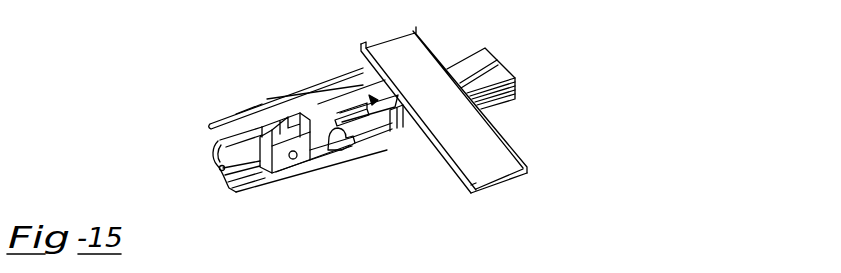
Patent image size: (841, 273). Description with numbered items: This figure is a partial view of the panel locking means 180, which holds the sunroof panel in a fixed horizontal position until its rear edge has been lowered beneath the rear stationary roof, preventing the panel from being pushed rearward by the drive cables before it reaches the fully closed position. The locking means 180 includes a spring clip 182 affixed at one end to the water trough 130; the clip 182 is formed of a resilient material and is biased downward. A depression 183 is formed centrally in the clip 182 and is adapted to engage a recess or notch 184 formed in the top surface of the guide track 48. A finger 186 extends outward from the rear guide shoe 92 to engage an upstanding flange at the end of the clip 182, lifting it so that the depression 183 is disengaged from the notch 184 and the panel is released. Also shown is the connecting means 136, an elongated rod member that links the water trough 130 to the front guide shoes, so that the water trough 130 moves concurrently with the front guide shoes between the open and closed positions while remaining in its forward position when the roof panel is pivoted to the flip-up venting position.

The guide track 48 is at (226, 144).
The rear guide shoe 92 is at (247, 114).
The water trough 130 is at (547, 213).
The connecting means 136 is at (307, 84).
The locking means 180 is at (401, 166).
The spring clip 182 is at (345, 79).
The depression 183 is at (373, 151).
The notch 184 is at (346, 159).
The finger 186 is at (293, 112).